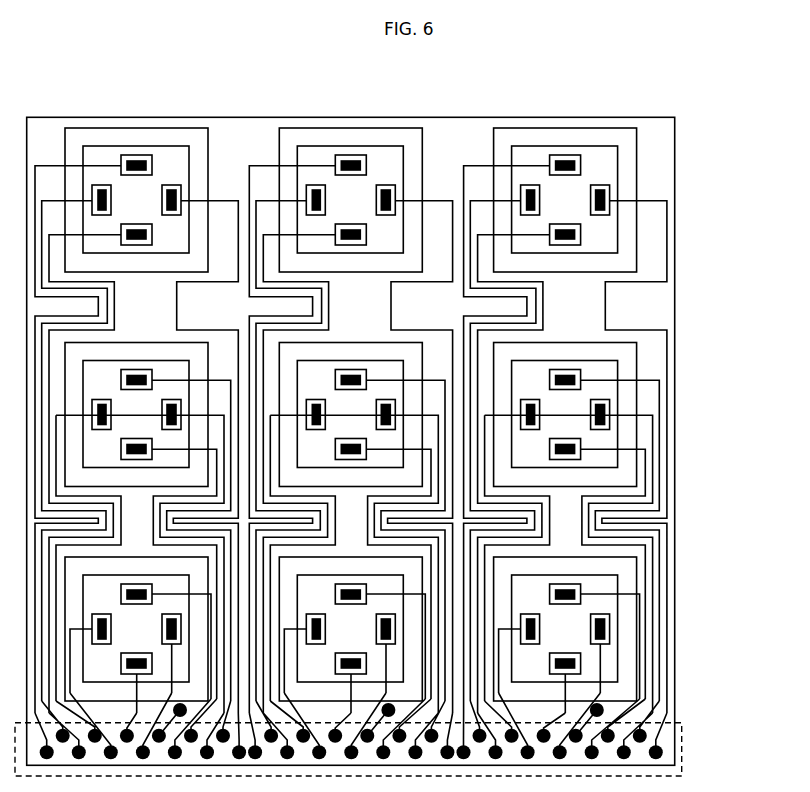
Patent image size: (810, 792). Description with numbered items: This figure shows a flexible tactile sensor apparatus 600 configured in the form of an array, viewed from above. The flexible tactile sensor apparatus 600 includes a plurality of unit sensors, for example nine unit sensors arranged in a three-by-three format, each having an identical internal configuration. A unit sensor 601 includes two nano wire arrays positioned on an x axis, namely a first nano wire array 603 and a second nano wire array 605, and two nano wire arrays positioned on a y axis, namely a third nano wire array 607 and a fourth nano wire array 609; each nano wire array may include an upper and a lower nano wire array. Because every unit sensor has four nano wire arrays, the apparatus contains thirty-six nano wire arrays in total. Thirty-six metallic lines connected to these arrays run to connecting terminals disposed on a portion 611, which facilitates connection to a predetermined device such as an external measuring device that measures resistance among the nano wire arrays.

The flexible tactile sensor apparatus 600 is at (716, 430).
The unit sensor 601 is at (637, 163).
The first nano wire array 603 is at (528, 193).
The second nano wire array 605 is at (603, 203).
The third nano wire array 607 is at (577, 233).
The fourth nano wire array 609 is at (562, 153).
The portion 611 is at (683, 745).